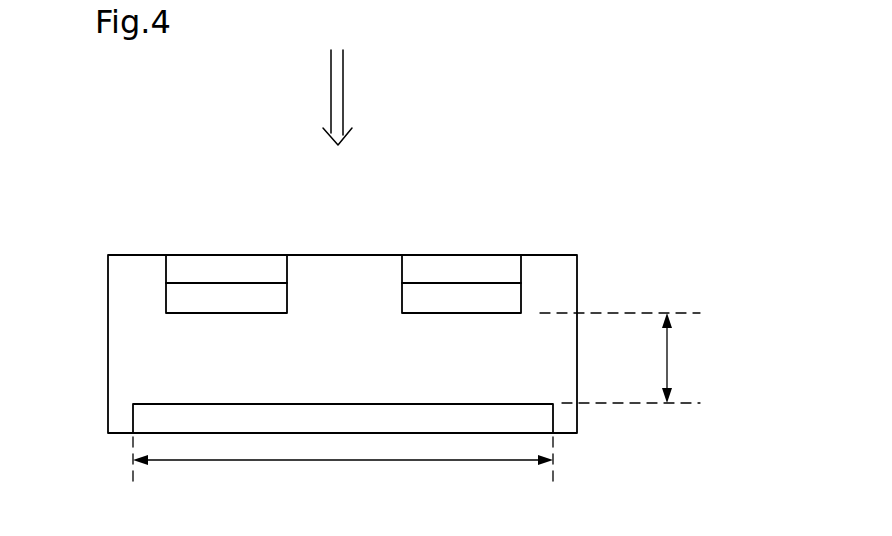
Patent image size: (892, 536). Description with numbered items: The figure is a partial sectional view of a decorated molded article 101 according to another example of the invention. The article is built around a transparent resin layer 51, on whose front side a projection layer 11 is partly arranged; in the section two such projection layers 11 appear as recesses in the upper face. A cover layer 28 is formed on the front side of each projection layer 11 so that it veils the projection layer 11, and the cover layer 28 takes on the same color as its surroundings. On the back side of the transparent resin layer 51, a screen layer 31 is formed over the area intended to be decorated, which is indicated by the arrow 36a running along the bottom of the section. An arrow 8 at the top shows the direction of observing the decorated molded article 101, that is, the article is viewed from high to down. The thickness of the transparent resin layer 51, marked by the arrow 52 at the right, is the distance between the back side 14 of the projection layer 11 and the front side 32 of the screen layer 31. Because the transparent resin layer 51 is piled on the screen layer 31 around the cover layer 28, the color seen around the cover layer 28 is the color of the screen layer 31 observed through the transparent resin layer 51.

The decorated molded article 101 is at (129, 223).
The arrow 8 is at (325, 97).
The cover layer 28 is at (202, 268).
The projection layer 11 is at (278, 298).
The screen layer 31 is at (302, 420).
The back side of the projection layer 14 is at (178, 316).
The transparent resin layer 51 is at (148, 362).
The front side of the screen layer 32 is at (165, 403).
The arrow 52 is at (668, 357).
The arrow 36a is at (518, 492).